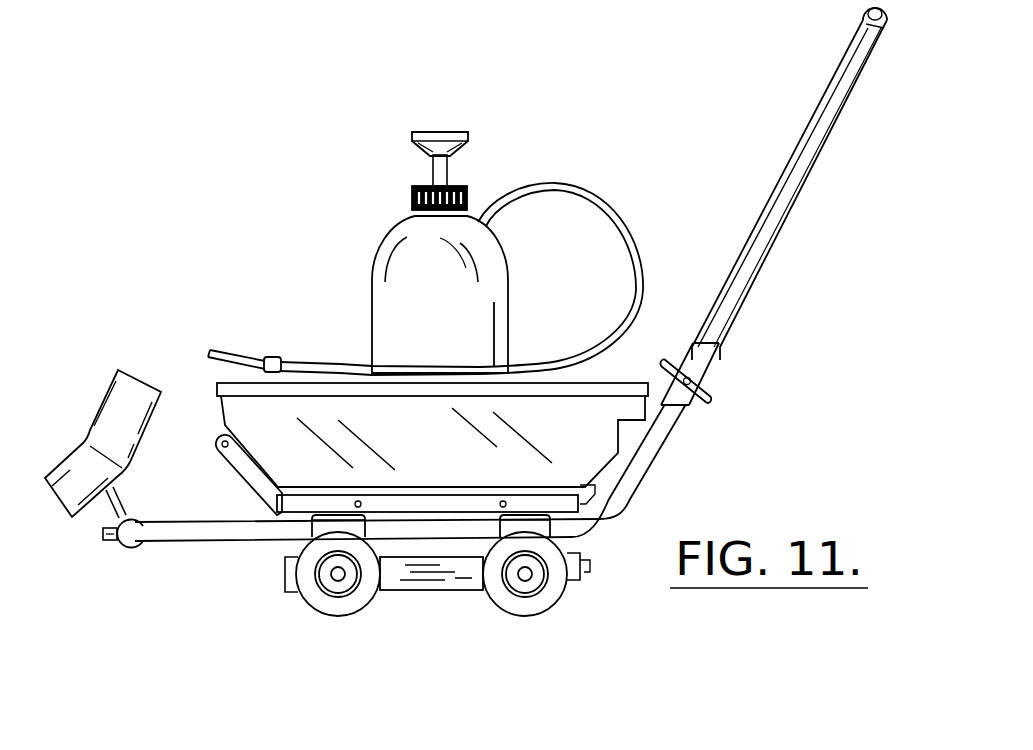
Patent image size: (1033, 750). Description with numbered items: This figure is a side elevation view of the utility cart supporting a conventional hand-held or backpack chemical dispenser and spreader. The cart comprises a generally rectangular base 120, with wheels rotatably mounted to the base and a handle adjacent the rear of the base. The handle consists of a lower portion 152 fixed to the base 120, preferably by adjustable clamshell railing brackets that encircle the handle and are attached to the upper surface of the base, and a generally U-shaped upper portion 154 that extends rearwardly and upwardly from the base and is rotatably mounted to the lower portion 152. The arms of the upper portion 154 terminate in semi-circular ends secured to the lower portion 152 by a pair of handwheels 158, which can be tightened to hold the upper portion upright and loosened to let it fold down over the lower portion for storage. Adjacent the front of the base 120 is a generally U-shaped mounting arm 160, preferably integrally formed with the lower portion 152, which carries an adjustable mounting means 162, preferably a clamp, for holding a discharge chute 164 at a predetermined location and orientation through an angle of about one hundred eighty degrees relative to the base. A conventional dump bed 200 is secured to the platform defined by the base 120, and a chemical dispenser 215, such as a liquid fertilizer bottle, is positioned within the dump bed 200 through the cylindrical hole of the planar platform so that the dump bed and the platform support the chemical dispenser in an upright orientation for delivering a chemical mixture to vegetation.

The wheeled base 120 is at (435, 577).
The lower handle tube 152 is at (628, 483).
The handle 154 is at (807, 147).
The clamp knob 158 is at (710, 388).
The frame bar 160 is at (198, 536).
The fastener 162 is at (108, 542).
The spray nozzle deflector 164 is at (113, 420).
The tray 200 is at (455, 457).
The sprayer tank 215 is at (463, 324).